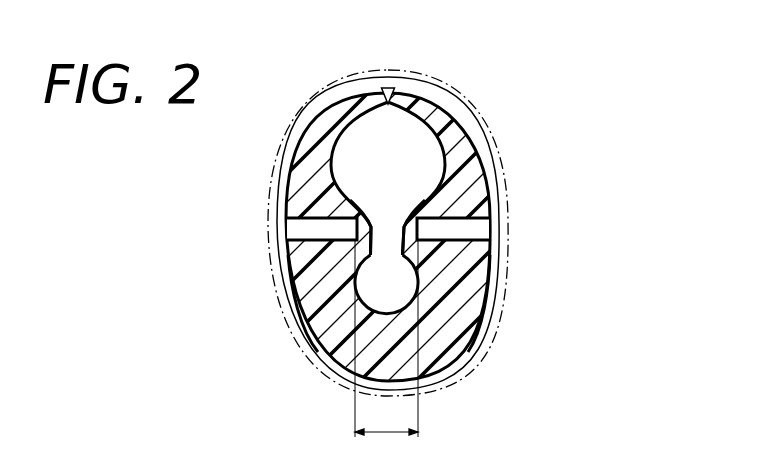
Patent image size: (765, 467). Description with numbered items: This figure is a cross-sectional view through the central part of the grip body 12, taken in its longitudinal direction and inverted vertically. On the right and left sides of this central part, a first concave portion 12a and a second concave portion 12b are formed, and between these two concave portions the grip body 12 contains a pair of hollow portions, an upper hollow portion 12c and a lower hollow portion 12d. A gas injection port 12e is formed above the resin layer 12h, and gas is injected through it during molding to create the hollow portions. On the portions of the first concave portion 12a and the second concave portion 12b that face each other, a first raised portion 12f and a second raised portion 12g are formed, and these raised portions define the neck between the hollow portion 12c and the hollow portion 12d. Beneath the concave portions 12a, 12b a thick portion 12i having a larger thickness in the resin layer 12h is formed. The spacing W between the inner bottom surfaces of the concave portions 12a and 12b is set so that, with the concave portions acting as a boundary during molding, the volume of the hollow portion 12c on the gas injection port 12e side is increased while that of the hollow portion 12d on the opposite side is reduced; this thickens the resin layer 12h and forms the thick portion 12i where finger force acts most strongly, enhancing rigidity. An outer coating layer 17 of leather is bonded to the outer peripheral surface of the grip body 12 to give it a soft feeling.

The grip body 12 is at (475, 116).
The outer coating layer 17 is at (466, 75).
The first concave portion 12a is at (308, 232).
The second concave portion 12b is at (468, 230).
The hollow portion 12c is at (408, 149).
The hollow portion 12d is at (404, 286).
The gas injection port 12e is at (389, 96).
The first raised portion 12f is at (373, 226).
The second raised portion 12g is at (399, 226).
The resin layer 12h is at (479, 300).
The thick portion 12i is at (338, 282).
The spacing W is at (386, 339).